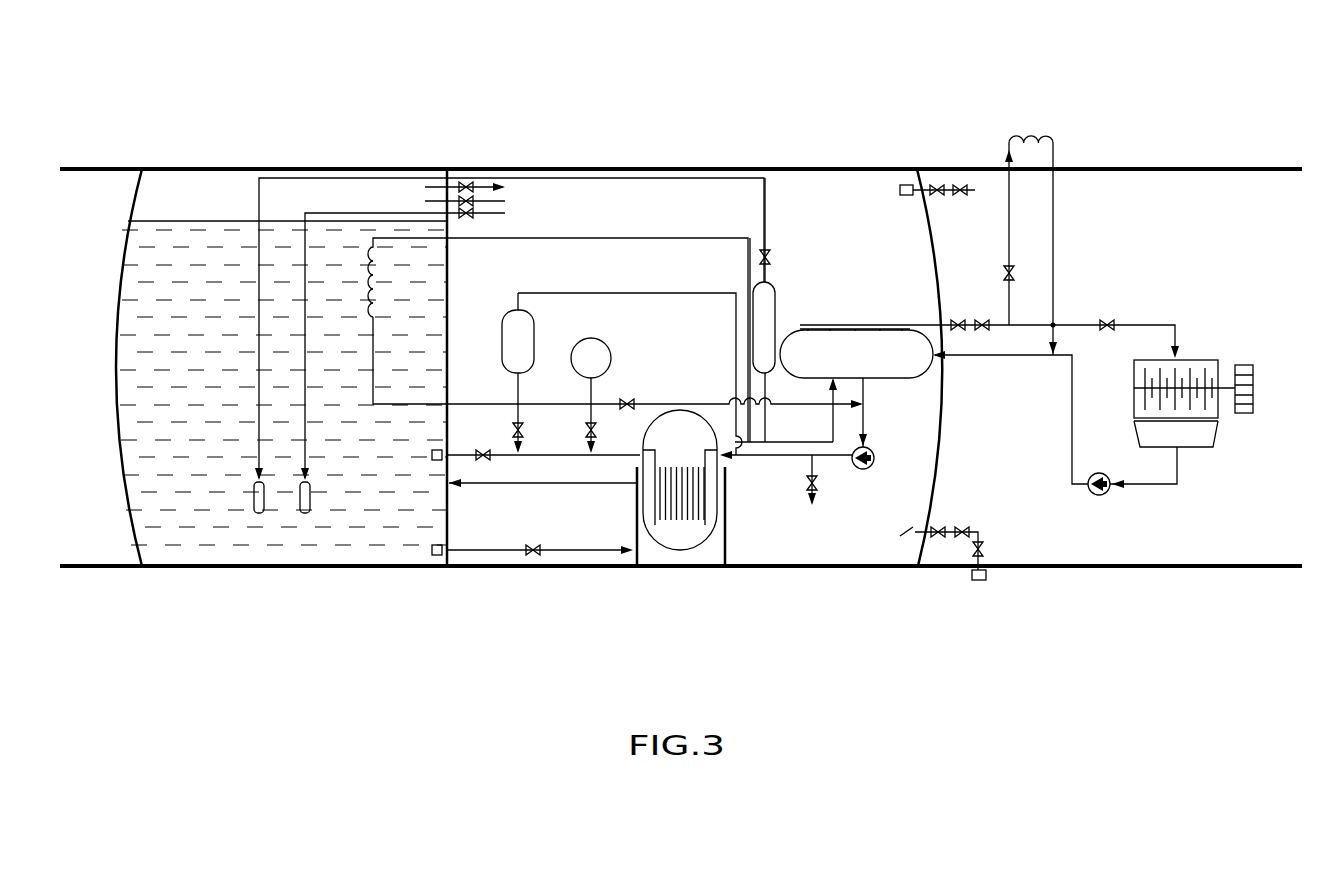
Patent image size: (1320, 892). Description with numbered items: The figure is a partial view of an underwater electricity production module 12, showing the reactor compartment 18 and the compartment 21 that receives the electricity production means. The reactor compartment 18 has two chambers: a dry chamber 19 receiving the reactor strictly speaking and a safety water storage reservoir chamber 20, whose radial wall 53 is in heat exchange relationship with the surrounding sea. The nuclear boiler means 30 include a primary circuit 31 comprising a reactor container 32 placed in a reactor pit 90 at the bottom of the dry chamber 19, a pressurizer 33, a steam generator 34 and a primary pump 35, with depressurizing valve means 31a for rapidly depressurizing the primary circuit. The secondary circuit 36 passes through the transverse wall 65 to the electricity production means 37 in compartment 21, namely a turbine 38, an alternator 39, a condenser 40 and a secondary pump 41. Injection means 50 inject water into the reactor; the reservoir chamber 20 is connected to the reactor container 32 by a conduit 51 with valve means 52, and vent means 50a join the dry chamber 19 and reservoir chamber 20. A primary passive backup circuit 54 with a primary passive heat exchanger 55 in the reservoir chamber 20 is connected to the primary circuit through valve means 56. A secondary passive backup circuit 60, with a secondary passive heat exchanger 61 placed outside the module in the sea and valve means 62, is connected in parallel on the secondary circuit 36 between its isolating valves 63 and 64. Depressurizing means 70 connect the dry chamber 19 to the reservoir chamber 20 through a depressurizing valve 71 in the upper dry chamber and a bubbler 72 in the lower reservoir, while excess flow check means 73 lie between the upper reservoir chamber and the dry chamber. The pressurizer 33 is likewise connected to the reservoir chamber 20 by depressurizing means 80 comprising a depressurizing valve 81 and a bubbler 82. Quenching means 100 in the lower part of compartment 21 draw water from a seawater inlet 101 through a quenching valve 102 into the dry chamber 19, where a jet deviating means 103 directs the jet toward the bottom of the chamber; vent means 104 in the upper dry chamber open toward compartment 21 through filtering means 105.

The module 12 is at (718, 115).
The reactor compartment 18 is at (528, 125).
The dry chamber 19 is at (632, 160).
The safety water storage reservoir chamber 20 is at (348, 155).
The compartment 21 is at (978, 155).
The nuclear boiler means 30 is at (643, 390).
The primary circuit 31 is at (720, 358).
The depressurizing valve means 31a is at (825, 492).
The reactor container 32 is at (668, 553).
The pressurizer 33 is at (785, 298).
The steam generator 34 is at (888, 316).
The primary pump 35 is at (880, 450).
The secondary circuit 36 is at (1080, 268).
The electricity production means 37 is at (1242, 320).
The turbine 38 is at (1208, 345).
The alternator 39 is at (1262, 375).
The condenser 40 is at (1210, 455).
The secondary pump 41 is at (1088, 494).
The injection means 50 is at (508, 322).
The vent means 50a is at (515, 201).
The conduit 51 is at (500, 450).
The valve means 52 is at (475, 450).
The radial wall 53 is at (263, 573).
The primary passive backup circuit 54 is at (365, 400).
The primary passive heat exchanger 55 is at (364, 280).
The valve means 56 is at (640, 392).
The secondary passive backup circuit 60 is at (1062, 190).
The secondary passive heat exchanger 61 is at (1065, 140).
The valve means 62 is at (1000, 272).
The isolating valve 63 is at (960, 358).
The isolating valve 64 is at (1107, 342).
The transverse wall 65 is at (915, 208).
The depressurizing means 70 is at (312, 196).
The depressurizing valve 71 is at (420, 204).
The bubbler 72 is at (313, 498).
The excess flow check means 73 is at (470, 168).
The depressurizing means 80 is at (243, 196).
The depressurizing valve 81 is at (775, 242).
The bubbler 82 is at (247, 498).
The reactor pit 90 is at (735, 522).
The quenching means 100 is at (936, 550).
The seawater inlet 101 is at (993, 580).
The quenching valve 102 is at (940, 520).
The means for deviating the water jet 103 is at (893, 535).
The vent means 104 is at (928, 178).
The filtering means 105 is at (905, 172).